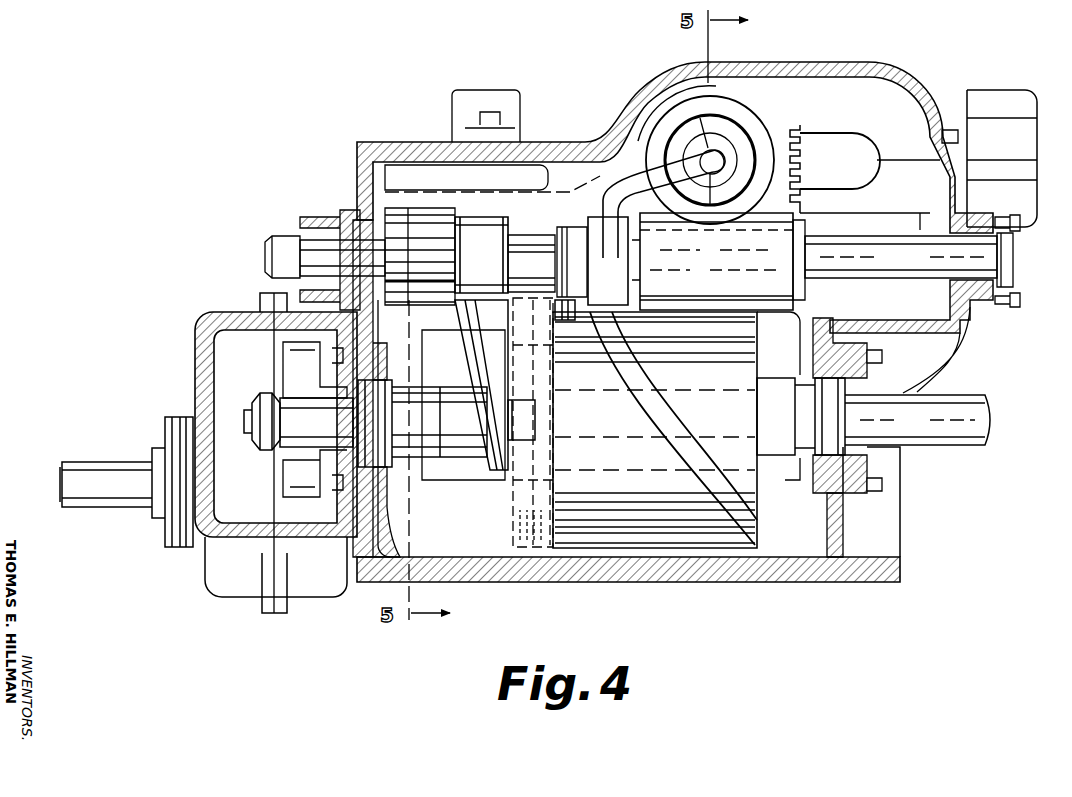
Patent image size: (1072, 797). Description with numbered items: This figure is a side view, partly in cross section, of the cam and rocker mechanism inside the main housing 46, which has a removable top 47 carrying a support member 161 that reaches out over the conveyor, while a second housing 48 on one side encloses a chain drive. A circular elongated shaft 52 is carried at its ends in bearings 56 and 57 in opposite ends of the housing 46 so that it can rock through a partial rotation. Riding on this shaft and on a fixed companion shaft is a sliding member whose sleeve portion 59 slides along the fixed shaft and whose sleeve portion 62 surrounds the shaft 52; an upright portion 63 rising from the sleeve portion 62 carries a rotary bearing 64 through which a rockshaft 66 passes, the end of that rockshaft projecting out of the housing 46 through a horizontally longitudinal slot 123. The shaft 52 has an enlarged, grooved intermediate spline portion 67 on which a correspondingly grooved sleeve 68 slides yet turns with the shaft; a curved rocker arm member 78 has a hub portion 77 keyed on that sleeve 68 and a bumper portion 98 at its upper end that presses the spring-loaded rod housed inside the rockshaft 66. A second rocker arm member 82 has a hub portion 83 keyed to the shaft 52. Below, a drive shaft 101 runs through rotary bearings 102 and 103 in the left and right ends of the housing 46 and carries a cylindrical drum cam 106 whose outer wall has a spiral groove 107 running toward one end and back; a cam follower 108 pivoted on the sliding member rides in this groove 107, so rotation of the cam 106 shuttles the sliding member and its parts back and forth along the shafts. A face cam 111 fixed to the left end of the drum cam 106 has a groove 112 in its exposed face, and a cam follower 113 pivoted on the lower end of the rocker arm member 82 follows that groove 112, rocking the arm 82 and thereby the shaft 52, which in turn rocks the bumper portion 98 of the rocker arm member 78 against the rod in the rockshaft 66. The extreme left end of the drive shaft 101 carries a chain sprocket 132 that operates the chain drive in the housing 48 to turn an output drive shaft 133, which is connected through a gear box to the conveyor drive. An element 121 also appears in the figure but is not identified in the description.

The housing 46 is at (730, 582).
The removable top 47 is at (895, 78).
The second housing 48 is at (228, 315).
The shaft 52 is at (918, 268).
The bearing 56 is at (1014, 236).
The bearing 57 is at (352, 218).
The sleeve portion 59 is at (417, 248).
The sleeve portion 62 is at (800, 220).
The upright portion 63 is at (748, 114).
The rotary bearing 64 is at (718, 261).
The rockshaft 66 is at (715, 244).
The intermediate spline portion 67 is at (531, 263).
The sleeve 68 is at (572, 262).
The hub portion 77 is at (620, 287).
The curved rocker arm member 78 is at (716, 228).
The rocker arm member 82 is at (466, 340).
The hub portion 83 is at (490, 273).
The bumper portion 98 is at (670, 177).
The drive shaft 101 is at (945, 447).
The rotary bearing 102 is at (350, 418).
The rotary bearing 103 is at (840, 420).
The cylindrical drum cam 106 is at (615, 445).
The spiral groove 107 is at (648, 380).
The cam follower 108 is at (575, 330).
The face cam 111 is at (532, 525).
The face cam groove 112 is at (512, 519).
The cam follower 113 is at (537, 420).
The gear segment 121 is at (796, 128).
The longitudinal slot 123 is at (878, 155).
The chain sprocket 132 is at (314, 388).
The output drive shaft 133 is at (122, 495).
The support member 161 is at (488, 92).